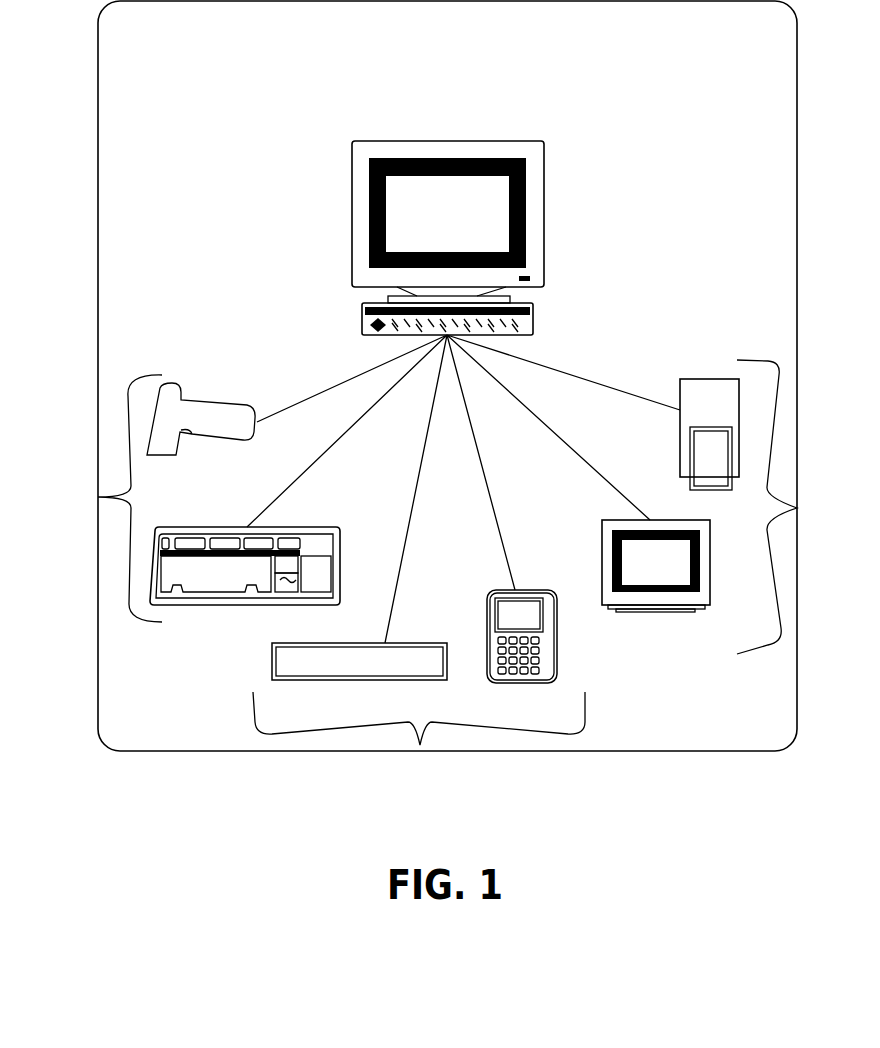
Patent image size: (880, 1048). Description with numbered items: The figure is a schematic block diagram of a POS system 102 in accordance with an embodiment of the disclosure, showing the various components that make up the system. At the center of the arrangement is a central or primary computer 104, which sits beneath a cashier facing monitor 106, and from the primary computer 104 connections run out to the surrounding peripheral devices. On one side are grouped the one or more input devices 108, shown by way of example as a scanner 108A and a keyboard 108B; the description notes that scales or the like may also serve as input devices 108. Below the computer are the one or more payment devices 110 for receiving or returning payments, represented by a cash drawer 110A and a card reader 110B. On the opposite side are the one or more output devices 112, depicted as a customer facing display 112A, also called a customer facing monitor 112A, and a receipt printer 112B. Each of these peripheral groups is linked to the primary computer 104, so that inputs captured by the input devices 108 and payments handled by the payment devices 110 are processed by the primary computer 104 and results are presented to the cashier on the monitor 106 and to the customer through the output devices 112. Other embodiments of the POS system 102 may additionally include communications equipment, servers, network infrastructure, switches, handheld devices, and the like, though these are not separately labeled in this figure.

The POS system 102 is at (670, 67).
The central or primary computer 104 is at (553, 302).
The monitor 106 is at (330, 183).
The input devices 108 is at (98, 497).
The scanner 108A is at (215, 418).
The keyboard 108B is at (310, 537).
The payment devices 110 is at (420, 745).
The cash drawer 110A is at (360, 662).
The card reader 110B is at (510, 595).
The output devices 112 is at (797, 508).
The customer facing display 112A is at (650, 575).
The receipt printer 112B is at (700, 400).